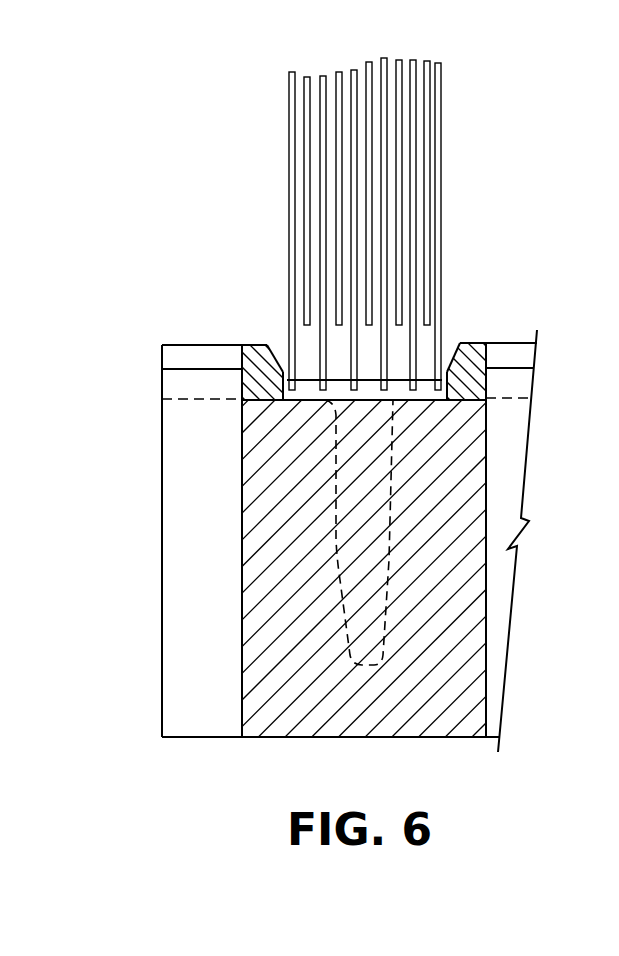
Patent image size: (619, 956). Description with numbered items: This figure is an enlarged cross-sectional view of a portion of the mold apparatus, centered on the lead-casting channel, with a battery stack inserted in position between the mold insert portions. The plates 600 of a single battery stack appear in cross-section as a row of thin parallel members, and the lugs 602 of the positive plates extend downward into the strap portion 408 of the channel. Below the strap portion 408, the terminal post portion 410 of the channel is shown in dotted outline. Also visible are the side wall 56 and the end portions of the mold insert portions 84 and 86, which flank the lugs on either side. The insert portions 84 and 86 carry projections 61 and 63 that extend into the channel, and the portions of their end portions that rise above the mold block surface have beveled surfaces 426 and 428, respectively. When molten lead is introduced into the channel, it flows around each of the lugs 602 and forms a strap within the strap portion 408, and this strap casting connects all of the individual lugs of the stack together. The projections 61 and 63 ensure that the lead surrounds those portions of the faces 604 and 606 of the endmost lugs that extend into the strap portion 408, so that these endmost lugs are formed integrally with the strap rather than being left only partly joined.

The plates 600 is at (290, 274).
The lugs 602 is at (323, 345).
The face 604 is at (440, 337).
The face 606 is at (275, 350).
The beveled surface 426 is at (270, 347).
The beveled surface 428 is at (453, 343).
The mold insert portion 84 is at (258, 359).
The mold insert portion 86 is at (483, 360).
The projection 61 is at (283, 385).
The projection 63 is at (440, 385).
The strap portion 408 is at (305, 404).
The terminal post portion 410 is at (362, 573).
The side wall 56 is at (370, 384).